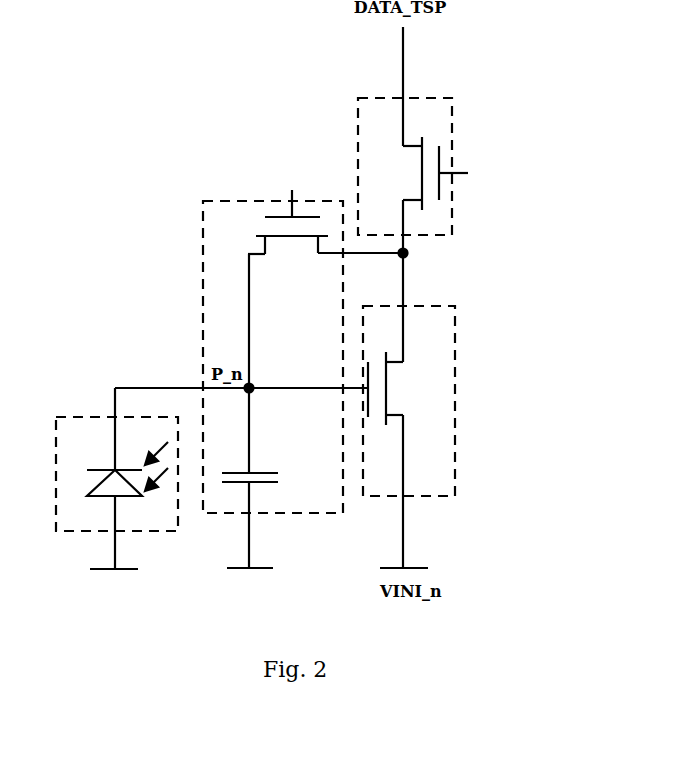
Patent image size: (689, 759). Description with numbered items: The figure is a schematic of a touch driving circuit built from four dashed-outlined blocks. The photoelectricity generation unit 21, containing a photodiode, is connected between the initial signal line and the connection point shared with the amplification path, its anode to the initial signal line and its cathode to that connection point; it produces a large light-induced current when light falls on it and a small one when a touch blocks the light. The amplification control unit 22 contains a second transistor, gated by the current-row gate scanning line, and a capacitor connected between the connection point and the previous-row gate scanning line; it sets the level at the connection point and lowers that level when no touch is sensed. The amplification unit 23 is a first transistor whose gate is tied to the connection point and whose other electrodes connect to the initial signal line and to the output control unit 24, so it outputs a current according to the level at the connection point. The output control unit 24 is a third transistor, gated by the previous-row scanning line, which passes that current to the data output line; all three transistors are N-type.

The photoelectricity generation unit 21 is at (122, 417).
The amplification control unit 22 is at (273, 201).
The amplification unit 23 is at (420, 306).
The output control unit 24 is at (420, 98).